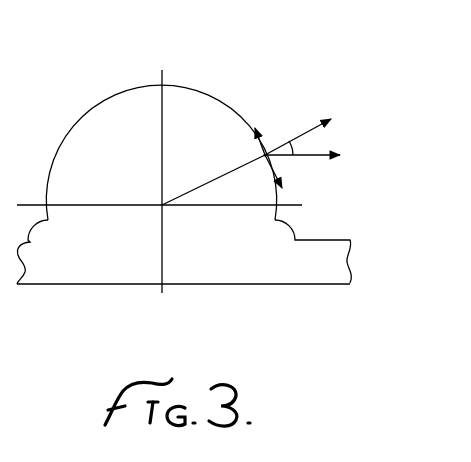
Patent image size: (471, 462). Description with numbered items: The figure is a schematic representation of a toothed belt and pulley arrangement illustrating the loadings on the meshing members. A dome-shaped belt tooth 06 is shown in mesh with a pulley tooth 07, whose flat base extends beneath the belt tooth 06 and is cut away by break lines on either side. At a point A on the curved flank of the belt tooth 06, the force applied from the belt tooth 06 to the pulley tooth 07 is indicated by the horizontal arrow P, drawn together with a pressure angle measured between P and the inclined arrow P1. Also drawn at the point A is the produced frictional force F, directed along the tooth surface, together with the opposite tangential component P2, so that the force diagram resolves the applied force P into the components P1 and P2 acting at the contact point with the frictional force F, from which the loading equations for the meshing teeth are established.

The belt tooth 06 is at (199, 106).
The pulley tooth 07 is at (312, 232).
The point of force application A is at (266, 147).
The frictional force F is at (258, 128).
The applied force P is at (310, 153).
The force component P1 is at (309, 132).
The force component P2 is at (284, 176).